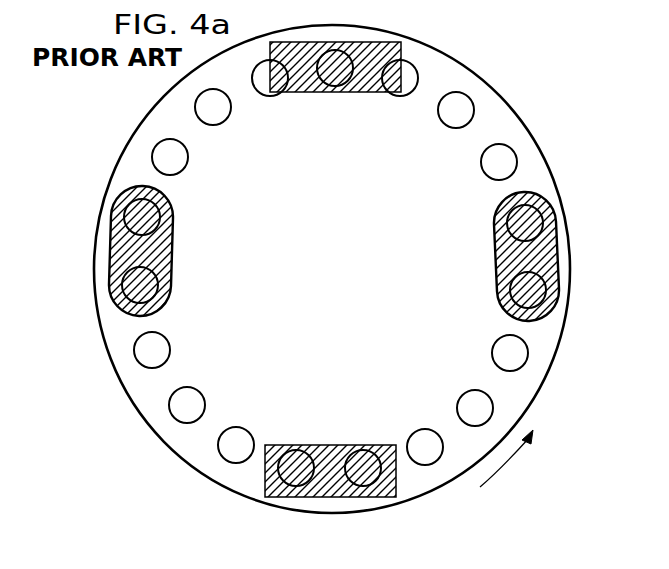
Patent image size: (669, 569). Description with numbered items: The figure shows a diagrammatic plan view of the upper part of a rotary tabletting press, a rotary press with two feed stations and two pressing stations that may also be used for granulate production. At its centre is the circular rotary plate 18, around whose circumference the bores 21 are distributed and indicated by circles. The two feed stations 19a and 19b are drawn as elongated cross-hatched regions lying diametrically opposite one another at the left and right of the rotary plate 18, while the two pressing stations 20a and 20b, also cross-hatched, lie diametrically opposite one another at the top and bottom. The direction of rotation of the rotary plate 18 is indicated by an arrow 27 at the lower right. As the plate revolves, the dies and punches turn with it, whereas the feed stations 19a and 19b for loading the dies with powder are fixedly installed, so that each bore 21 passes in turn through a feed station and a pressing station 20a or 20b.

The rotary plate 18 is at (534, 177).
The feed station 19a is at (546, 258).
The feed station 19b is at (117, 250).
The pressing station 20a is at (388, 50).
The pressing station 20b is at (386, 490).
The bores 21 is at (196, 107).
The arrow 27 is at (480, 487).